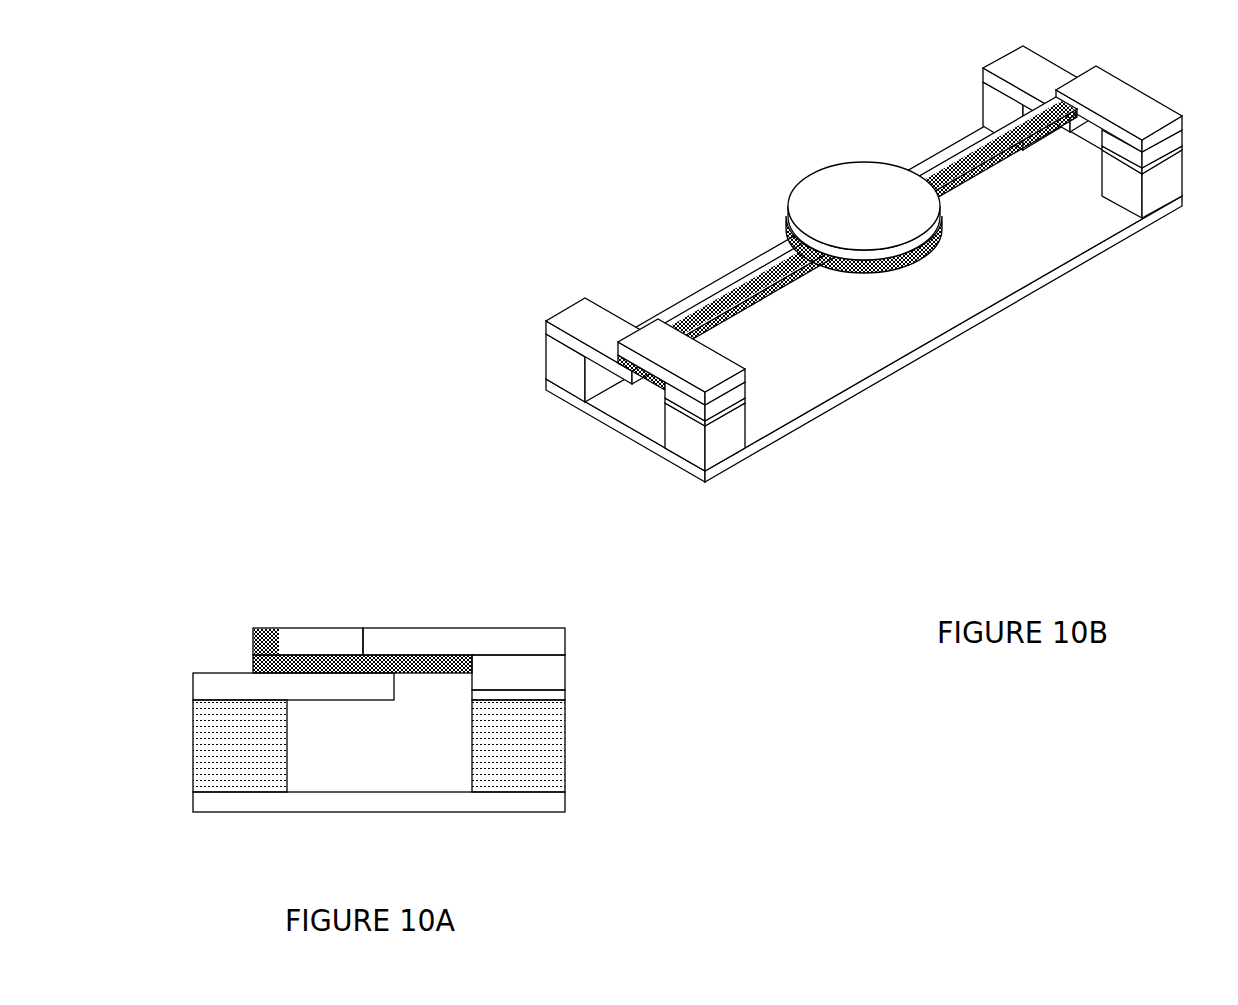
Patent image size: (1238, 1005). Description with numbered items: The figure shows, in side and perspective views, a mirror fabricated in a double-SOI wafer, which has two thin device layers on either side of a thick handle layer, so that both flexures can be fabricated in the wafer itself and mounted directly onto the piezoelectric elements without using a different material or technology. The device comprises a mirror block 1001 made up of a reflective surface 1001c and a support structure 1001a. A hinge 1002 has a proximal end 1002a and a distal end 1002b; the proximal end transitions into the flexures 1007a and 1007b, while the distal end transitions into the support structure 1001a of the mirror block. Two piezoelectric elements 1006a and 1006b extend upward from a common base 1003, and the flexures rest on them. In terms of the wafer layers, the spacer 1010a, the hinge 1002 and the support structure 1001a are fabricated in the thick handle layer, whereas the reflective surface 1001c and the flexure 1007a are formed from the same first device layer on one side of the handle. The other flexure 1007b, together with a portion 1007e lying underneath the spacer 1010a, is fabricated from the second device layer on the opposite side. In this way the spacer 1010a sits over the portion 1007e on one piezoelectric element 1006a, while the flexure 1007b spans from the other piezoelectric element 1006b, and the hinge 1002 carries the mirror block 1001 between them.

In FIG. 10B, the mirror block 1001 is at (994, 164).
In FIG. 10A, the mirror block 1001 is at (293, 606).
In FIG. 10B, the support structure 1001a is at (948, 245).
In FIG. 10A, the support structure 1001a is at (243, 663).
In FIG. 10B, the reflective surface 1001c is at (861, 190).
In FIG. 10A, the reflective surface 1001c is at (270, 640).
In FIG. 10B, the hinge 1002 is at (728, 272).
In FIG. 10B, the proximal end 1002a is at (768, 248).
In FIG. 10B, the distal end 1002b is at (633, 328).
In FIG. 10A, the distal end 1002b is at (377, 659).
In FIG. 10B, the base 1003 is at (1005, 318).
In FIG. 10A, the base 1003 is at (400, 806).
In FIG. 10B, the piezoelectric element 1006a is at (730, 440).
In FIG. 10A, the piezoelectric element 1006a is at (560, 749).
In FIG. 10B, the piezoelectric element 1006b is at (542, 362).
In FIG. 10A, the piezoelectric element 1006b is at (188, 748).
In FIG. 10B, the flexure 1007a is at (665, 345).
In FIG. 10A, the flexure 1007a is at (458, 617).
In FIG. 10B, the flexure 1007b is at (545, 313).
In FIG. 10A, the flexure 1007b is at (187, 681).
In FIG. 10B, the portion underneath spacer 1007e is at (750, 398).
In FIG. 10A, the portion underneath spacer 1007e is at (560, 693).
In FIG. 10B, the spacer 1010a is at (750, 388).
In FIG. 10A, the spacer 1010a is at (560, 665).